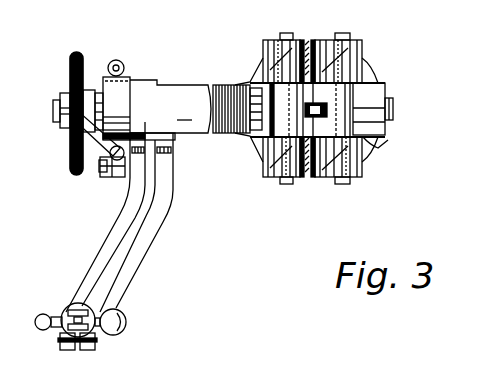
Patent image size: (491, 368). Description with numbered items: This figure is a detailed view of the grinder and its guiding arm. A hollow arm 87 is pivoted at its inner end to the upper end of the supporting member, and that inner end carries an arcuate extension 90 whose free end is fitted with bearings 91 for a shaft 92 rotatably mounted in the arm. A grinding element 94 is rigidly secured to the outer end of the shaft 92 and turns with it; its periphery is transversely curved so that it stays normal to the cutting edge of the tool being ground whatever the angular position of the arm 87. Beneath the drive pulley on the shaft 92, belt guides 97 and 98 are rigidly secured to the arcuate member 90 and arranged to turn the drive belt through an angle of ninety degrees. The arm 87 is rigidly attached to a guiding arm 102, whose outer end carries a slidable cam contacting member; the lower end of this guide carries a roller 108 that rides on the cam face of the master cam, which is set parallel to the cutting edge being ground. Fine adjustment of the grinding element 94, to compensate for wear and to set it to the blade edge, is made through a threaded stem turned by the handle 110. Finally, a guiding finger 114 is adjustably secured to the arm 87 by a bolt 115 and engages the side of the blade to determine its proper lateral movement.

The hollow arm 87 is at (200, 88).
The arcuate extension 90 is at (372, 140).
The bearings 91 is at (378, 93).
The shaft 92 is at (53, 112).
The grinding element 94 is at (69, 158).
The belt guide 97 is at (265, 43).
The belt guide 98 is at (365, 55).
The guiding arm 102 is at (153, 215).
The roller 108 is at (70, 308).
The handle 110 is at (122, 313).
The guiding finger 114 is at (100, 172).
The bolt 115 is at (102, 186).